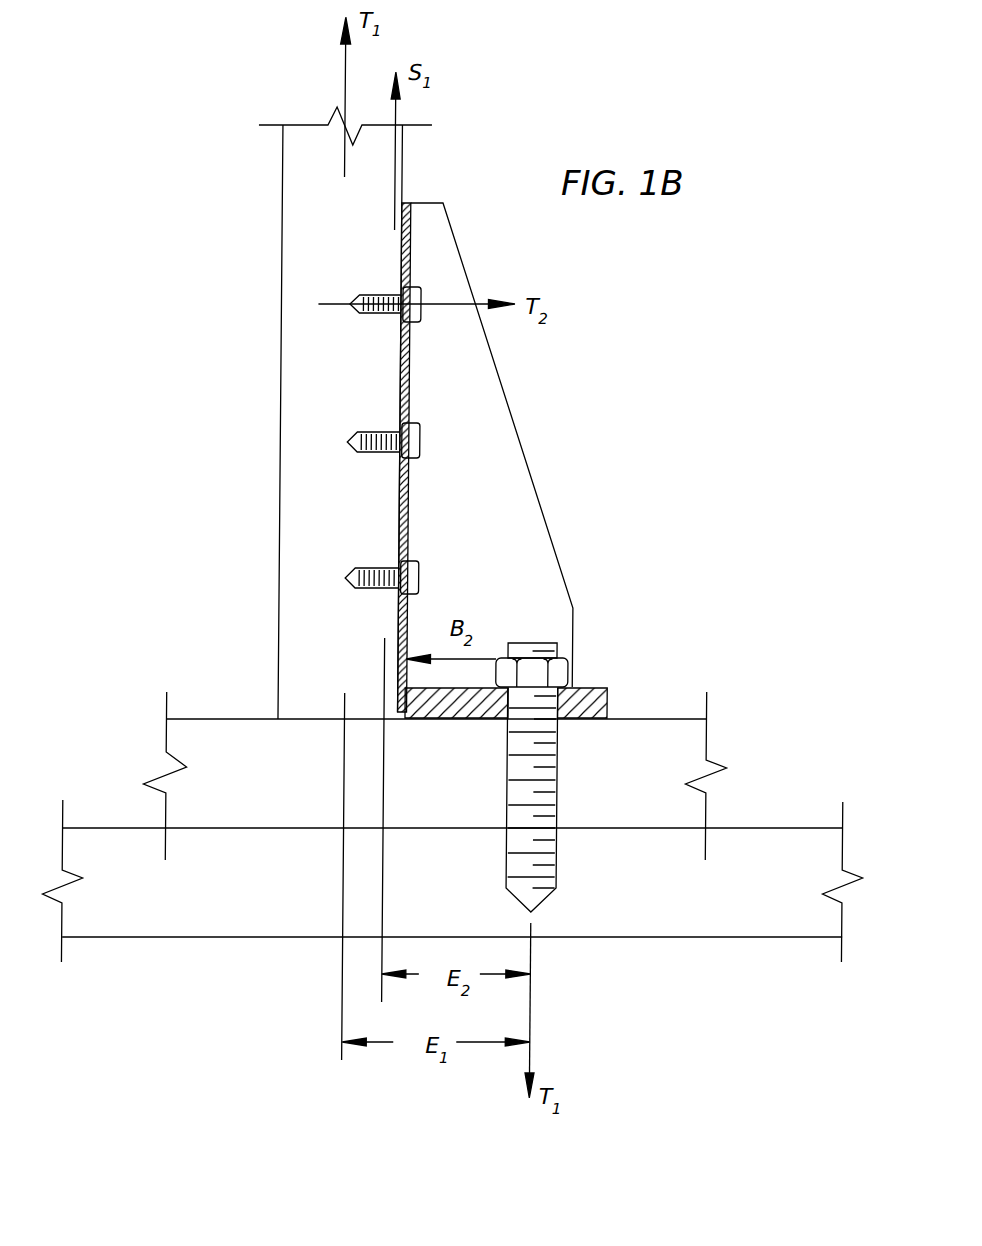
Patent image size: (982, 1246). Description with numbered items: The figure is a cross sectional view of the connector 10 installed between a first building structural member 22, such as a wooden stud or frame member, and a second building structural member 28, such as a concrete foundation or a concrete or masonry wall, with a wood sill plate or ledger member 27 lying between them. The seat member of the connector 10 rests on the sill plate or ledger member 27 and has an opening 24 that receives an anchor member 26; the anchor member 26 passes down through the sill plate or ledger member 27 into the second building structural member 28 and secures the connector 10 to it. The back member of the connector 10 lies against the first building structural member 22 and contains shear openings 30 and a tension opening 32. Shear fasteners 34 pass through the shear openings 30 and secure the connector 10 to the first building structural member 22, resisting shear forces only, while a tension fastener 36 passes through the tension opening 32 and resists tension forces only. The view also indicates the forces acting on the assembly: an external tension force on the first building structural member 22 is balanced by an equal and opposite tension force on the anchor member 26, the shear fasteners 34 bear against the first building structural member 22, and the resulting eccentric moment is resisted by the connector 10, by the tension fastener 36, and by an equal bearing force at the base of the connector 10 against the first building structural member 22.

The connector 10 is at (528, 397).
The first building structural member 22 is at (295, 342).
The opening 24 is at (580, 712).
The anchor member 26 is at (546, 642).
The wood sill plate or ledger member 27 is at (668, 737).
The second building structural member 28 is at (794, 840).
The shear openings 30 is at (402, 432).
The tension opening 32 is at (402, 291).
The shear fasteners 34 is at (424, 440).
The tension fastener 36 is at (423, 298).